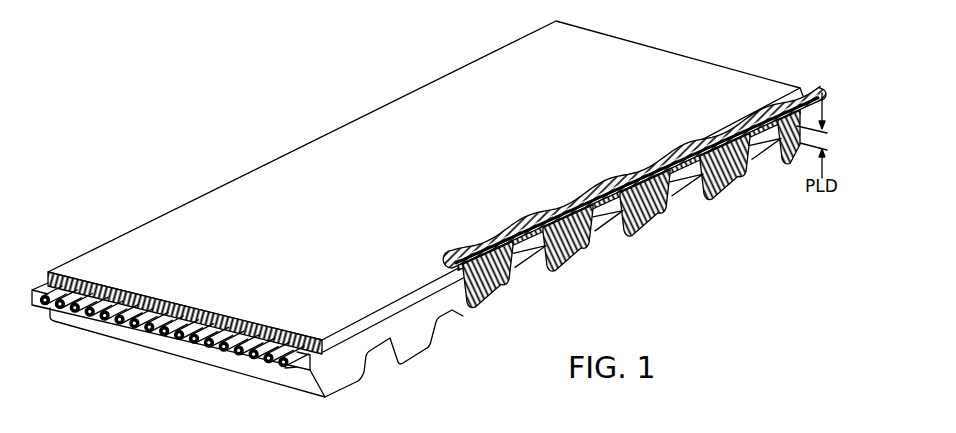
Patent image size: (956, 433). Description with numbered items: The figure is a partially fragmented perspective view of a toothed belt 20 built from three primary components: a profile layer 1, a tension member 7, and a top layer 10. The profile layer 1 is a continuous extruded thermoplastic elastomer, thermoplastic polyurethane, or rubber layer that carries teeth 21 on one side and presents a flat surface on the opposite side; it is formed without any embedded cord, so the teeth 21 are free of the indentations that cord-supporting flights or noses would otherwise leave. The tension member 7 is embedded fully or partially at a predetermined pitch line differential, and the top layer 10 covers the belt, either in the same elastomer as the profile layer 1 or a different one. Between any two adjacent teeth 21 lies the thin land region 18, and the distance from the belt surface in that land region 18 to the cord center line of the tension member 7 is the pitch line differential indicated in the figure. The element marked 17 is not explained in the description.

The toothed belt 20 is at (289, 73).
The top layer 10 is at (278, 172).
The tension member 7 is at (283, 366).
The belt tooth with fabric 17 is at (506, 275).
The profile layer 1 is at (580, 263).
The teeth 21 is at (648, 226).
The land region 18 is at (688, 184).